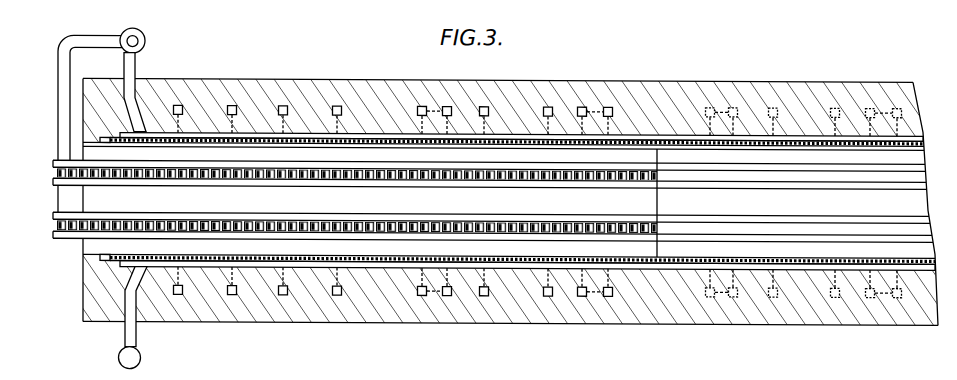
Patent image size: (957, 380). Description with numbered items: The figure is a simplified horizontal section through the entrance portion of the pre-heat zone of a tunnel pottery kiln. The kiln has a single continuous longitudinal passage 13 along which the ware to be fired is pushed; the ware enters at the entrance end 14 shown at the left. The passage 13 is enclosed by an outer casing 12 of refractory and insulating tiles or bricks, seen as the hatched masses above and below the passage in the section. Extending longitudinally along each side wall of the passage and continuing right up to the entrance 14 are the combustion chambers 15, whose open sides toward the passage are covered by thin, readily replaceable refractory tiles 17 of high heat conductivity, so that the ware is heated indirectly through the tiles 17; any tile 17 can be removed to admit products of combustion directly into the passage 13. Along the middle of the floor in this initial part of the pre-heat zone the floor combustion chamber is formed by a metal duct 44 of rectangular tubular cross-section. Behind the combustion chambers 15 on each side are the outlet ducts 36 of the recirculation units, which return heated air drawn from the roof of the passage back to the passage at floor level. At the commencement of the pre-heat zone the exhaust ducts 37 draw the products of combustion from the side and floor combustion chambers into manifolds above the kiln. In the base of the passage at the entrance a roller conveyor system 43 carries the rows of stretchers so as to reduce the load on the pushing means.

The outer casing 12 is at (378, 95).
The longitudinal passage 13 is at (352, 145).
The passage entrance end 14 is at (94, 248).
The combustion chambers 15 is at (510, 118).
The refractory tiles 17 is at (303, 136).
The outlet ducts 36 is at (447, 104).
The exhaust ducts 37 is at (132, 68).
The roller conveyor system 43 is at (58, 173).
The metal duct 44 is at (403, 209).